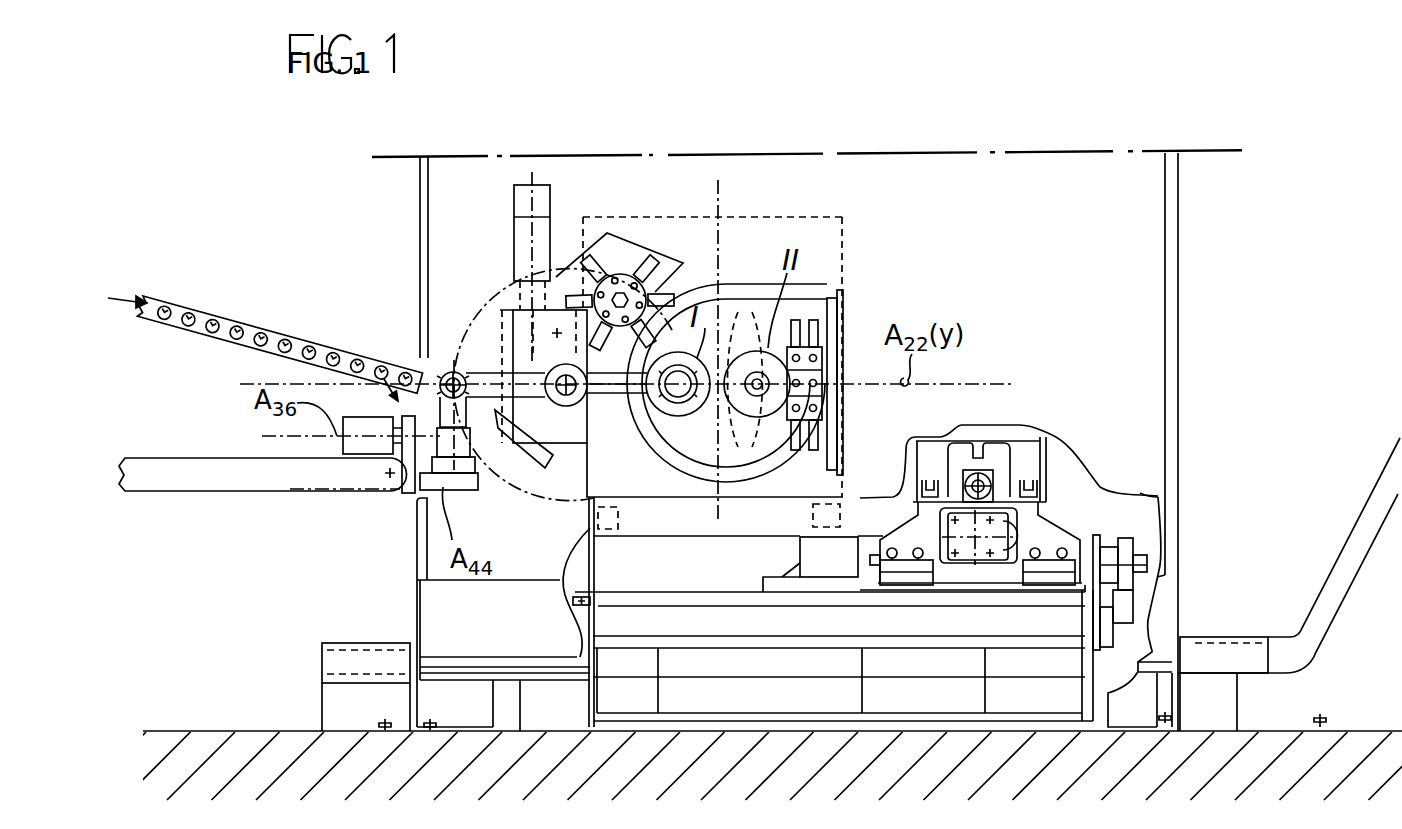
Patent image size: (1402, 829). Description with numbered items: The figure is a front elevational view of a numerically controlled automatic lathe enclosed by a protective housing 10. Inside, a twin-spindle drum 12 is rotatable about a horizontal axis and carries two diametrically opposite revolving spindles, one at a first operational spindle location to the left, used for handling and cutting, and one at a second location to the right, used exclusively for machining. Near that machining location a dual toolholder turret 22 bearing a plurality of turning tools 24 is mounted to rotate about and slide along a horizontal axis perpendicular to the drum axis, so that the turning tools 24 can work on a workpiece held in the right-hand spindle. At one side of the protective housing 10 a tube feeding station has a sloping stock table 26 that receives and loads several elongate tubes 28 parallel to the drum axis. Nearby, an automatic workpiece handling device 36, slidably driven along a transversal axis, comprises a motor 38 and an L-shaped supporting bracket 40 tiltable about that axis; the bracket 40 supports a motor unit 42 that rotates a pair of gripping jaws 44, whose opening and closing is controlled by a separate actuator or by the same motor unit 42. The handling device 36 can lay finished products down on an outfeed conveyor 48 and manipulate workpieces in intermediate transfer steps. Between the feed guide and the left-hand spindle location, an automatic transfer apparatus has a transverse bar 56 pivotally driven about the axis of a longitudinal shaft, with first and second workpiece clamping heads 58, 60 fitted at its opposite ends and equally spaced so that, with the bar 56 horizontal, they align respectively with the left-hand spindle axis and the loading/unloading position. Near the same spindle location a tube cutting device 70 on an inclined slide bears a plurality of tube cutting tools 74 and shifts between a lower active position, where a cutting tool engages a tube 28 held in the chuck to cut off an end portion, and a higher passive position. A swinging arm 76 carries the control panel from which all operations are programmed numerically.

The protective housing 10 is at (1178, 278).
The twin-spindle drum 12 is at (752, 285).
The dual toolholder turret 22 is at (827, 358).
The turning tools 24 is at (832, 298).
The sloping stock table 26 is at (216, 310).
The elongate tubes 28 is at (318, 345).
The automatic workpiece handling device 36 is at (379, 353).
The motor 38 is at (363, 427).
The L-shaped supporting bracket 40 is at (417, 546).
The motor unit 42 is at (447, 458).
The gripping jaws 44 is at (412, 492).
The outfeed conveyor 48 is at (192, 465).
The transverse bar 56 is at (605, 392).
The first workpiece clamping head 58 is at (458, 368).
The second workpiece clamping head 60 is at (676, 410).
The tube cutting device 70 is at (662, 262).
The tube cutting tools 74 is at (677, 365).
The swinging arm 76 is at (1377, 510).